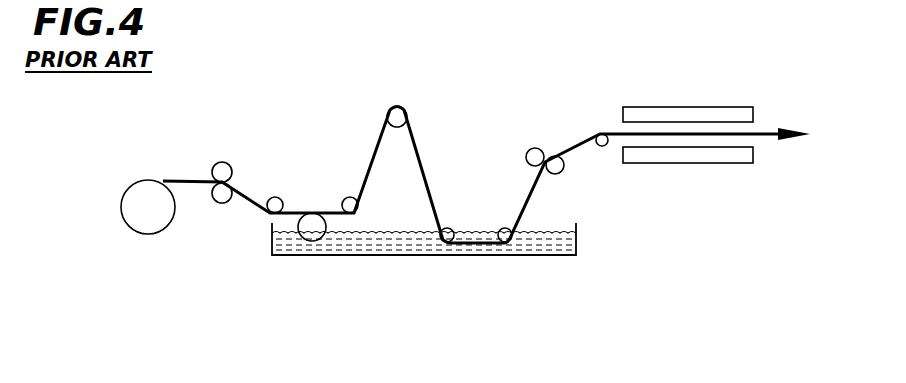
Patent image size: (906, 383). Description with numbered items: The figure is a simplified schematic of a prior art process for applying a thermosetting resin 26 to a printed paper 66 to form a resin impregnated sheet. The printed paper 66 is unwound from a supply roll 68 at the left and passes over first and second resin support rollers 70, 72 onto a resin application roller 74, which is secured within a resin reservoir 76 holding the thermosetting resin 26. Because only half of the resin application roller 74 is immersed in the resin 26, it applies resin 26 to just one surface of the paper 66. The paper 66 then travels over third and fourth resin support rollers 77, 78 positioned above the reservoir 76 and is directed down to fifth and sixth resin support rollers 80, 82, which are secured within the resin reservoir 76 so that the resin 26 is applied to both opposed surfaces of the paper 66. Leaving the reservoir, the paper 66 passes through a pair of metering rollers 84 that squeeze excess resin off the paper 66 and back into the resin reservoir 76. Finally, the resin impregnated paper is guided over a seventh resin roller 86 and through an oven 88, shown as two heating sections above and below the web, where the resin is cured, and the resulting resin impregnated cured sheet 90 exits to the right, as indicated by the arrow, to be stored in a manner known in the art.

The thermosetting resin 26 is at (398, 243).
The printed paper 66 is at (165, 178).
The supply roll 68 is at (147, 218).
The first resin support roller 70 is at (223, 197).
The second resin support roller 72 is at (274, 197).
The resin application roller 74 is at (311, 222).
The resin reservoir 76 is at (349, 257).
The third resin support roller 77 is at (351, 203).
The fourth resin support roller 78 is at (397, 115).
The fifth resin support roller 80 is at (445, 233).
The sixth resin support roller 82 is at (505, 232).
The metering rollers 84 is at (535, 153).
The seventh resin roller 86 is at (603, 136).
The oven 88 is at (698, 107).
The resin impregnated cured sheet 90 is at (765, 133).